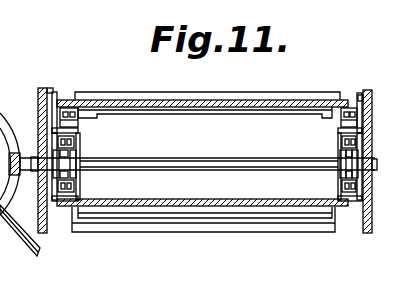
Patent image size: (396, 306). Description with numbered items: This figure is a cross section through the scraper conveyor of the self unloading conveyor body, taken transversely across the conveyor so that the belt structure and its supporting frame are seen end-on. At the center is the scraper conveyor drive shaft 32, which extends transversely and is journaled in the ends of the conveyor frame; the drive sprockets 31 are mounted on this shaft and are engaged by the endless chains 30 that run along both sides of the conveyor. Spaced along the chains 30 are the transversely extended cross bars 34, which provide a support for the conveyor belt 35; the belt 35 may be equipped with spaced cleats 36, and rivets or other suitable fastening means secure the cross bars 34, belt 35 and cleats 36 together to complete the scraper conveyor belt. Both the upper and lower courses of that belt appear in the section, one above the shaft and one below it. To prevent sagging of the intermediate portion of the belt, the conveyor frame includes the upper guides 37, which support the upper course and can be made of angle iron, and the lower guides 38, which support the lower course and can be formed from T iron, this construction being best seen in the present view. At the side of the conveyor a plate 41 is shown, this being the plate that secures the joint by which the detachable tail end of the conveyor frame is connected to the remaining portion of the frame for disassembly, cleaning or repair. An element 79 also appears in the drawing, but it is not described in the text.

The endless chains 30 is at (63, 106).
The drive sprockets 31 is at (74, 147).
The scraper conveyor drive shaft 32 is at (156, 160).
The cross bars 34 is at (221, 114).
The conveyor belt 35 is at (164, 104).
The cleats 36 is at (239, 93).
The upper guides 37 is at (338, 124).
The lower guides 38 is at (350, 203).
The plate 41 is at (37, 102).
The strut 79 is at (4, 224).